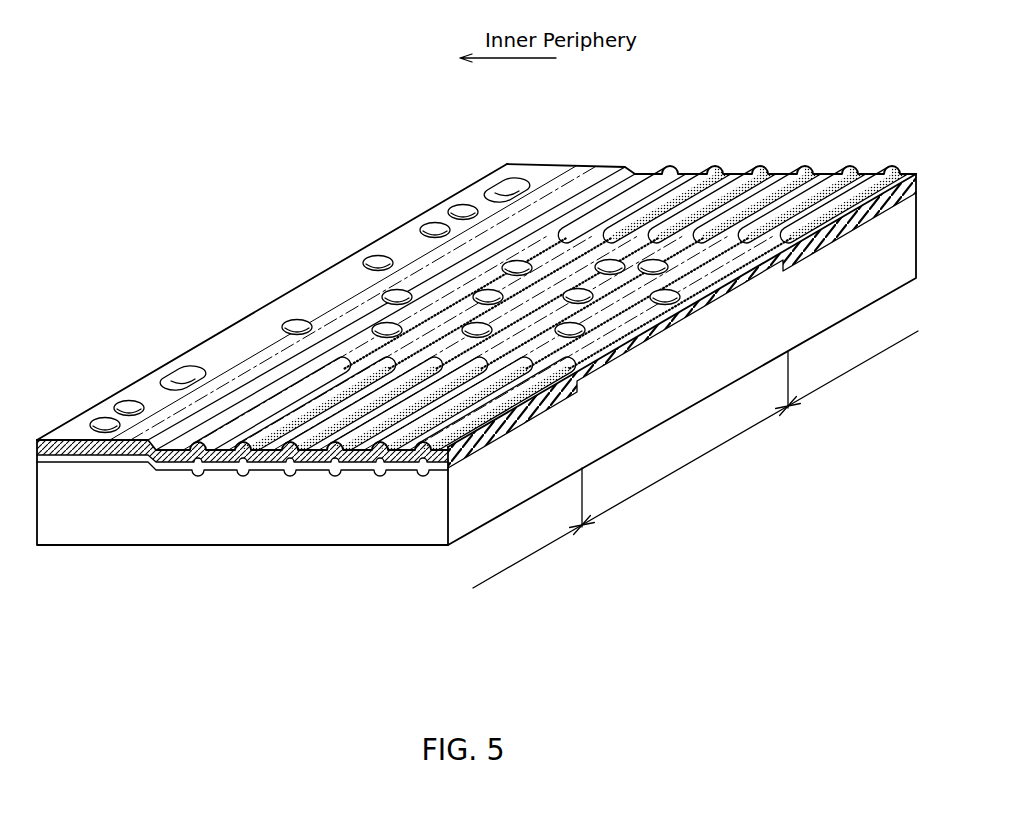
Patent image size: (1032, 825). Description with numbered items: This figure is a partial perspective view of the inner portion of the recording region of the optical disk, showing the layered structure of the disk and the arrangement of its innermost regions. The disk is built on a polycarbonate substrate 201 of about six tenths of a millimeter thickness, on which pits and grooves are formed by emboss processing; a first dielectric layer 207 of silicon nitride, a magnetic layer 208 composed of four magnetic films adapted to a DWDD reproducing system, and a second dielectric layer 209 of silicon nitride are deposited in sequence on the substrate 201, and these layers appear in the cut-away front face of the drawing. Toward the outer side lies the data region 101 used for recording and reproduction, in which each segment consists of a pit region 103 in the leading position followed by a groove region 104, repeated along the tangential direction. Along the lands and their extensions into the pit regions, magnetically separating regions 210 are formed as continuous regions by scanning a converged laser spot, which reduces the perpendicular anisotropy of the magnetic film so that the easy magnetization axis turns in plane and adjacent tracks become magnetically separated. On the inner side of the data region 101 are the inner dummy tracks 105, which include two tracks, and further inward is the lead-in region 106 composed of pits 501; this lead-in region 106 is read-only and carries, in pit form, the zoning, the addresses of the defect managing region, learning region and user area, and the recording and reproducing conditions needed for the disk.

The data region 101 is at (710, 120).
The pit region 103 is at (685, 465).
The groove region 104 is at (695, 459).
The inner dummy tracks 105 is at (710, 158).
The lead-in region 106 is at (598, 156).
The polycarbonate substrate 201 is at (212, 518).
The first dielectric layer 207 is at (267, 467).
The magnetic layer 208 is at (313, 467).
The second dielectric layer 209 is at (358, 466).
The magnetically separating regions 210 is at (488, 347).
The pits 501 is at (130, 402).